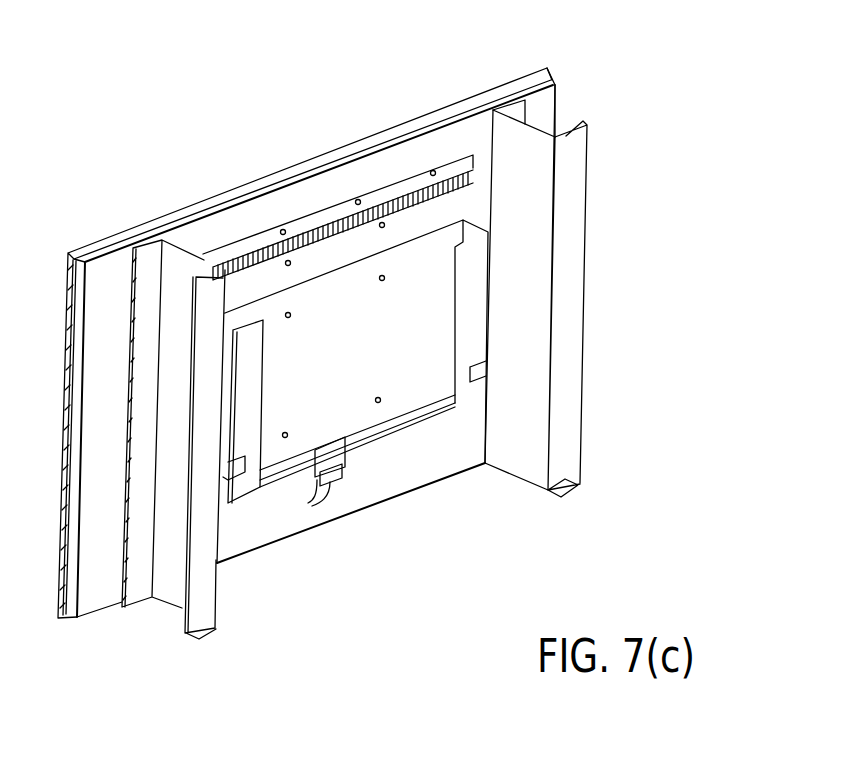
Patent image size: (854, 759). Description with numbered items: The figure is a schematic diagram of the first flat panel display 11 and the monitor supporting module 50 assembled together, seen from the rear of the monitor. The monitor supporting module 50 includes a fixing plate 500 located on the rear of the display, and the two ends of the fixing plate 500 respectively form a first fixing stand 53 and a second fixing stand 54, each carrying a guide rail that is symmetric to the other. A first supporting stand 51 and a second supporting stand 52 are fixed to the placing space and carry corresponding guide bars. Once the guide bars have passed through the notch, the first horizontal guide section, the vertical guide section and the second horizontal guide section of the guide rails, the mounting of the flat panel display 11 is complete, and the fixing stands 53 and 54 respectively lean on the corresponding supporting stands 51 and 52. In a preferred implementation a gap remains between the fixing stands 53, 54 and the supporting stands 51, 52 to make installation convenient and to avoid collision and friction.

The flat panel display 11 is at (422, 114).
The monitor supporting module 50 is at (495, 490).
The first supporting stand 51 is at (567, 463).
The second supporting stand 52 is at (203, 597).
The first fixing stand 53 is at (463, 397).
The second fixing stand 54 is at (243, 490).
The fixing plate 500 is at (357, 420).